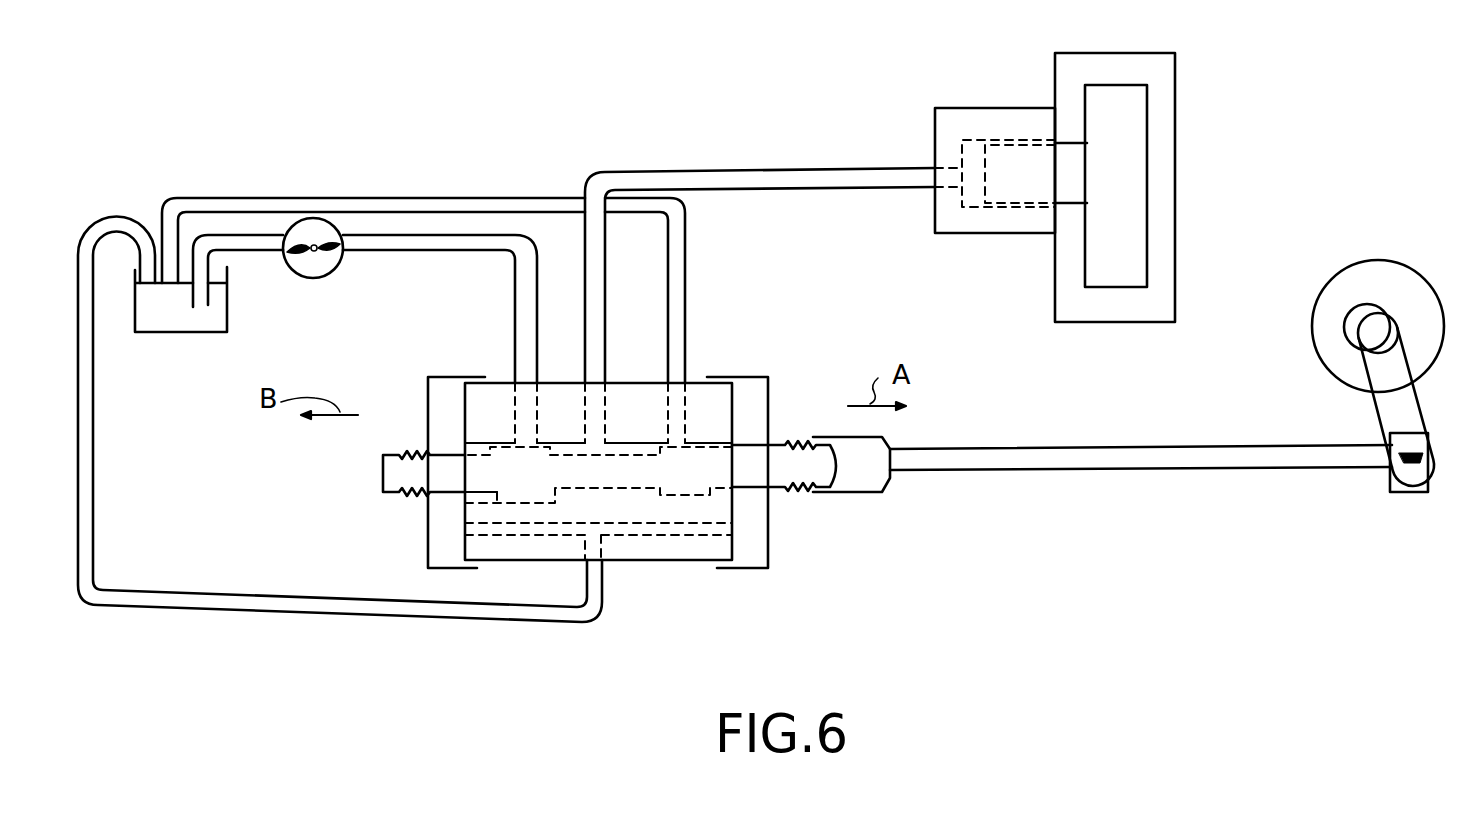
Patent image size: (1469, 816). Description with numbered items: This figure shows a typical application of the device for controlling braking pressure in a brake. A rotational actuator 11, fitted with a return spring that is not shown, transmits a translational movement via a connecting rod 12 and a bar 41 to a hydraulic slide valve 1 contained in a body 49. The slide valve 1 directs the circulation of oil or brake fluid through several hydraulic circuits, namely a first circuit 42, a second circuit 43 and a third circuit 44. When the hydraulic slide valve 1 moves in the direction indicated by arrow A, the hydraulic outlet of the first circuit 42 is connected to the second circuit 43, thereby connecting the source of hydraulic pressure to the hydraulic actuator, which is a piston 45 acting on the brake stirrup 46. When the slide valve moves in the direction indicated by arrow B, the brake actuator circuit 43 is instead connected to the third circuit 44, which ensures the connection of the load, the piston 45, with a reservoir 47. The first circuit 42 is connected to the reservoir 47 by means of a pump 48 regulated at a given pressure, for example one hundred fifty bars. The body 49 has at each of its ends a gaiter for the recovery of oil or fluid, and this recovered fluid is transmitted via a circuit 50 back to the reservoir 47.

The hydraulic slide valve 1 is at (800, 492).
The rotational actuator 11 is at (1410, 268).
The connecting rod 12 is at (1428, 412).
The bar 41 is at (1205, 470).
The first circuit 42 is at (515, 292).
The second circuit 43 is at (607, 272).
The third circuit 44 is at (686, 248).
The piston 45 is at (1003, 207).
The brake stirrup 46 is at (1175, 95).
The reservoir 47 is at (228, 318).
The pump 48 is at (343, 262).
The body 49 is at (640, 562).
The circuit 50 is at (202, 592).